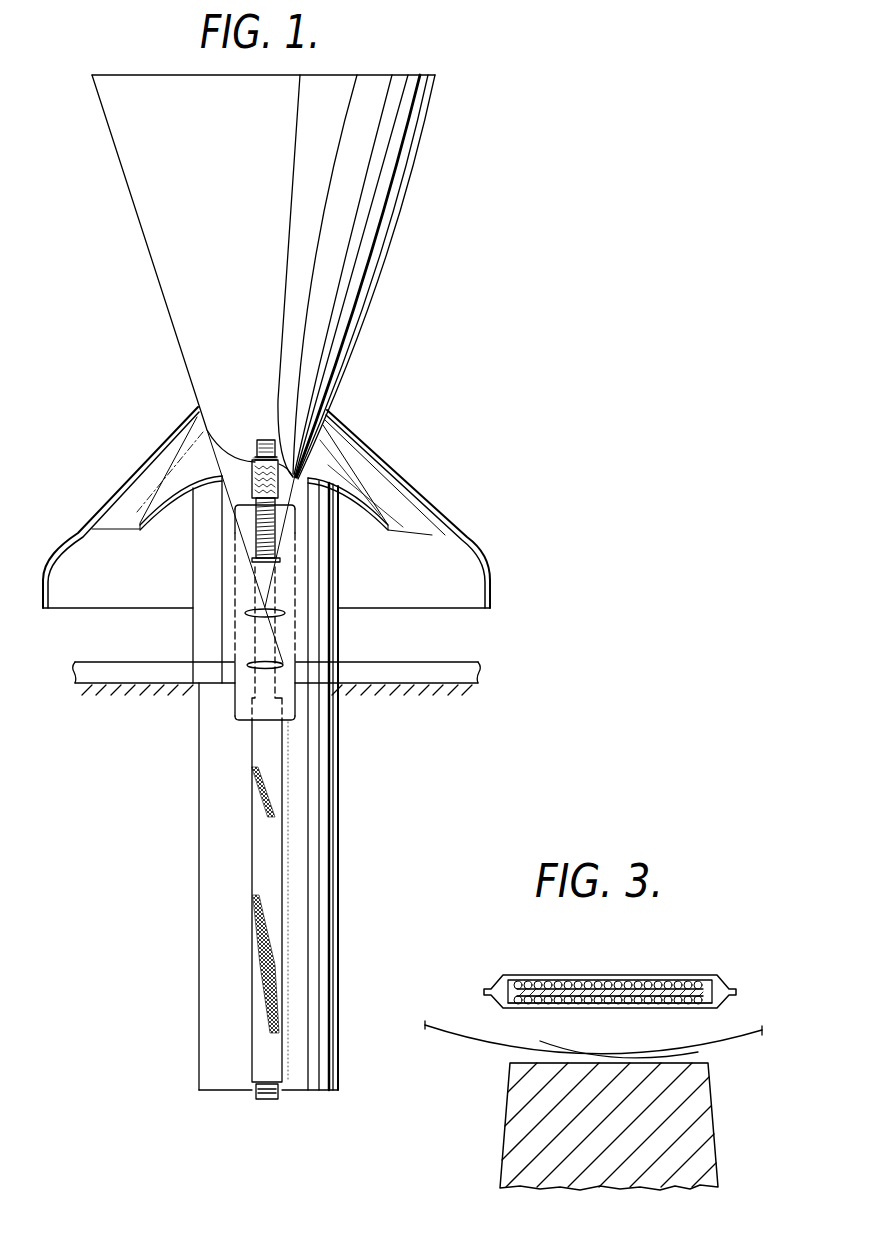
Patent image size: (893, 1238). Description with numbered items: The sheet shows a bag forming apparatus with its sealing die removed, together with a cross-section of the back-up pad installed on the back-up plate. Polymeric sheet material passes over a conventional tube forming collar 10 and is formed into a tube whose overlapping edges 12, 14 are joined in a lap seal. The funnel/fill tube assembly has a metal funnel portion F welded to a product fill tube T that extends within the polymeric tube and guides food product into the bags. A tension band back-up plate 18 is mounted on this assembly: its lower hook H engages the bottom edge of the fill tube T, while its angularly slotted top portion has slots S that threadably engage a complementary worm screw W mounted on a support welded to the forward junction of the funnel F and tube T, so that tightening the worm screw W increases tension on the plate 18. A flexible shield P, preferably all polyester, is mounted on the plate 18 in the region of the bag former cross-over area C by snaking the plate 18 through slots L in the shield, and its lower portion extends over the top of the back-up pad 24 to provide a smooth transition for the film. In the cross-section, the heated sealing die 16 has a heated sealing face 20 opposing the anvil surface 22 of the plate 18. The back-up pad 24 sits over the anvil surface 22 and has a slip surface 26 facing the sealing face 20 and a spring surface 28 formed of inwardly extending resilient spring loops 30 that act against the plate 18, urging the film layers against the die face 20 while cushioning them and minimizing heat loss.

In FIG. 1, the funnel portion F is at (368, 267).
In FIG. 1, the tube forming collar 10 is at (393, 492).
In FIG. 1, the product fill tube T is at (293, 477).
In FIG. 1, the flexible shield P is at (297, 703).
In FIG. 1, the back-up plate 18 is at (265, 437).
In FIG. 3, the back-up plate 18 is at (657, 992).
In FIG. 1, the worm screw W is at (253, 458).
In FIG. 1, the slots S is at (267, 533).
In FIG. 1, the slots L is at (248, 553).
In FIG. 1, the bag former cross-over area C is at (262, 603).
In FIG. 1, the back-up pad 24 is at (273, 857).
In FIG. 3, the back-up pad 24 is at (548, 972).
In FIG. 1, the lower hook H is at (270, 1099).
In FIG. 3, the resilient spring loops 30 is at (622, 978).
In FIG. 3, the anvil surface 22 is at (558, 998).
In FIG. 3, the spring surface 28 is at (620, 1007).
In FIG. 3, the slip surface 26 is at (650, 1008).
In FIG. 3, the overlapping edge 12 is at (560, 1042).
In FIG. 3, the overlapping edge 14 is at (693, 1045).
In FIG. 3, the heated sealing face 20 is at (707, 1063).
In FIG. 3, the heated sealing die 16 is at (503, 1141).